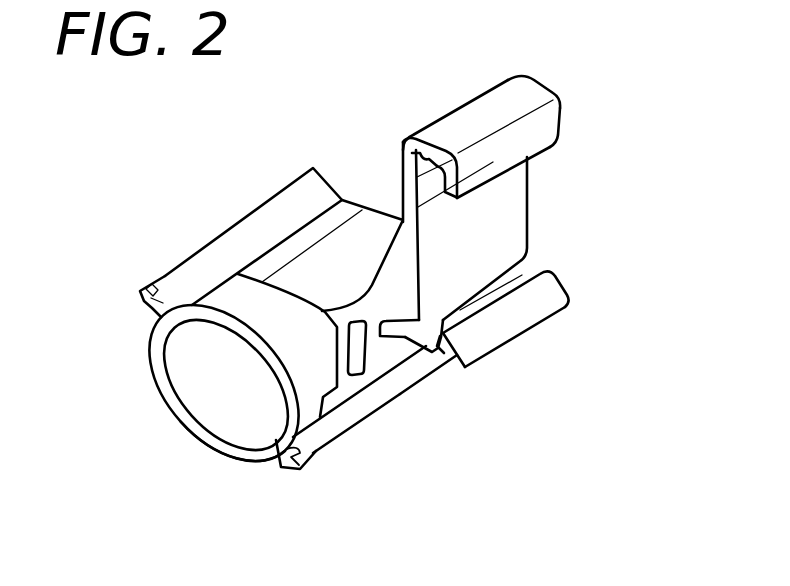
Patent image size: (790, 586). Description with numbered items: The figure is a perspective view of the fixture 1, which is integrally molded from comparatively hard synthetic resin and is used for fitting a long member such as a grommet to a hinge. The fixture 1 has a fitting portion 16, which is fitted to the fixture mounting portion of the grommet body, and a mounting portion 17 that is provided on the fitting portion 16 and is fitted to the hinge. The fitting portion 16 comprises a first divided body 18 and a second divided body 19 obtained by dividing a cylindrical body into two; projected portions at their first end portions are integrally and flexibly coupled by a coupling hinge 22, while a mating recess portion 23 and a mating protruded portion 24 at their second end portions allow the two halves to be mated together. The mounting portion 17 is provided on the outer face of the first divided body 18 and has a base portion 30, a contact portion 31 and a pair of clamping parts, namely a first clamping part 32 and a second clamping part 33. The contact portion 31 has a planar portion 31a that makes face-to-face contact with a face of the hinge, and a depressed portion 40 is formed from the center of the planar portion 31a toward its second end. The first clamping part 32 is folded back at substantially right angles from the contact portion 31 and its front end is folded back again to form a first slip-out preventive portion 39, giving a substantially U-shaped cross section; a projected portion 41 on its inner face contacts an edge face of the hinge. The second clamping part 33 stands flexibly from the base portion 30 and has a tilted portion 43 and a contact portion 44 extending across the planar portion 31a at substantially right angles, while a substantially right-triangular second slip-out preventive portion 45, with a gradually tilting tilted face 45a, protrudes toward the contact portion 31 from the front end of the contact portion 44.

The fixture 1 is at (205, 218).
The fitting portion 16 is at (164, 422).
The mounting portion 17 is at (560, 85).
The first divided body 18 is at (242, 342).
The second divided body 19 is at (210, 445).
The coupling hinge 22 is at (313, 449).
The mating recess portion 23 is at (263, 190).
The mating protruded portion 24 is at (133, 310).
The base portion 30 is at (366, 416).
The contact portion 31 is at (403, 200).
The planar portion 31a is at (513, 205).
The first clamping part 32 is at (480, 111).
The second clamping part 33 is at (455, 365).
The first slip-out preventive portion 39 is at (553, 127).
The depressed portion 40 is at (413, 172).
The projected portion 41 is at (413, 137).
The tilted portion 43 is at (392, 340).
The contact portion 44 is at (423, 355).
The second slip-out preventive portion 45 is at (562, 282).
The tilted face 45a is at (537, 310).